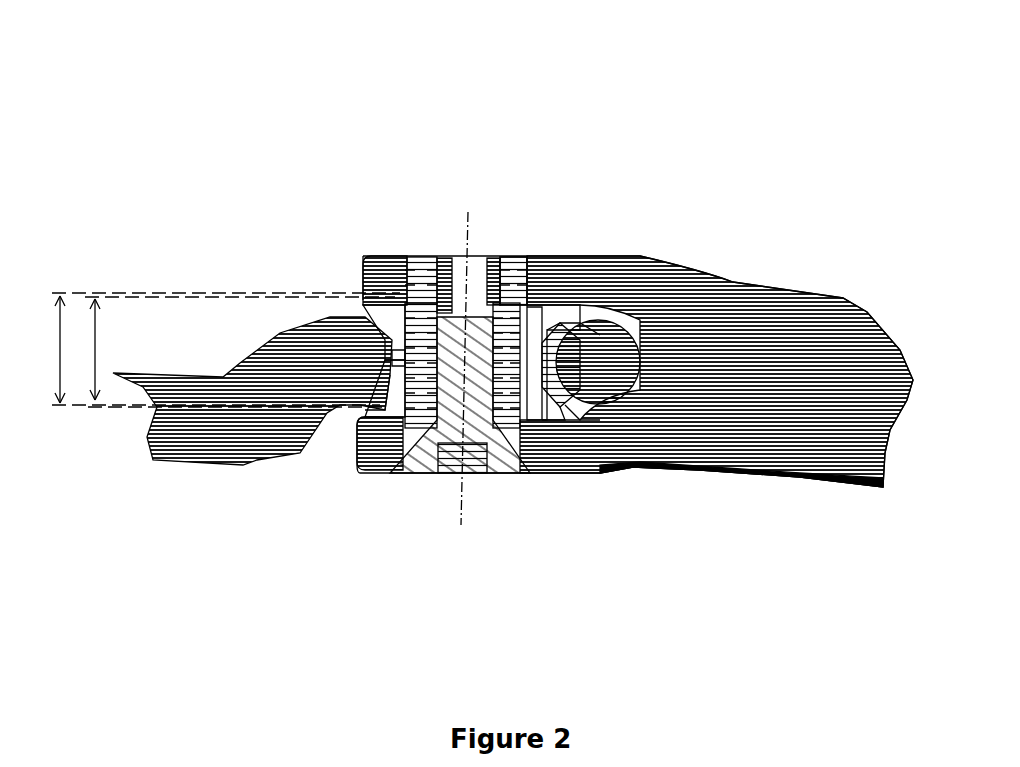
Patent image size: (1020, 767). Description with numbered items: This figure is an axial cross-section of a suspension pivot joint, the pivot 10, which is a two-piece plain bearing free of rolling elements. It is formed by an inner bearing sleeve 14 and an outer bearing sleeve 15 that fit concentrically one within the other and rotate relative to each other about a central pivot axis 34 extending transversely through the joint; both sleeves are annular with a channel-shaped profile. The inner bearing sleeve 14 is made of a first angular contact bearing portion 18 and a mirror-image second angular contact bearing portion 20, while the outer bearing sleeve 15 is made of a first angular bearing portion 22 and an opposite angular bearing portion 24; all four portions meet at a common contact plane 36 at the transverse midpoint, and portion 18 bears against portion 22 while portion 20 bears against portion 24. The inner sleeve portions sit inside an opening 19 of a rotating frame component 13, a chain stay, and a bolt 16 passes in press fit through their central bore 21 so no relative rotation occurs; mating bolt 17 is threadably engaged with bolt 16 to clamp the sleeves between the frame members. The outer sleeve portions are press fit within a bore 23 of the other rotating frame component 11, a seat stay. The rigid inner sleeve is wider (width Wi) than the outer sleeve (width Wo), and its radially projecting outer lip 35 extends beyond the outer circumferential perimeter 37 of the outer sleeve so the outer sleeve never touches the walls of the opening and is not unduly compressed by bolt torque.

The pivot 10 is at (418, 158).
The rotating frame component 11 is at (272, 368).
The rotating frame component 13 is at (810, 437).
The inner bearing sleeve 14 is at (539, 309).
The outer bearing sleeve 15 is at (566, 309).
The bolt 16 is at (513, 263).
The bolt 17 is at (505, 472).
The first angular contact bearing portion 18 is at (392, 400).
The frame component opening 19 is at (578, 416).
The second angular contact bearing portion 20 is at (399, 312).
The central bore 21 is at (513, 333).
The first angular bearing portion 22 is at (370, 408).
The bore 23 is at (400, 362).
The second angular bearing portion 24 is at (383, 327).
The central pivot axis 34 is at (455, 528).
The radially projecting outer lip 35 is at (557, 420).
The contact plane 36 is at (532, 376).
The outer circumferential perimeter 37 is at (567, 413).